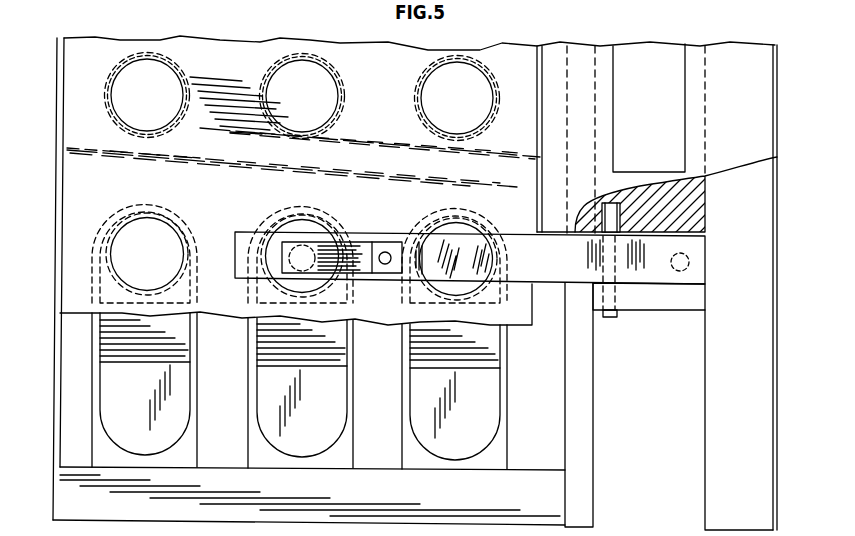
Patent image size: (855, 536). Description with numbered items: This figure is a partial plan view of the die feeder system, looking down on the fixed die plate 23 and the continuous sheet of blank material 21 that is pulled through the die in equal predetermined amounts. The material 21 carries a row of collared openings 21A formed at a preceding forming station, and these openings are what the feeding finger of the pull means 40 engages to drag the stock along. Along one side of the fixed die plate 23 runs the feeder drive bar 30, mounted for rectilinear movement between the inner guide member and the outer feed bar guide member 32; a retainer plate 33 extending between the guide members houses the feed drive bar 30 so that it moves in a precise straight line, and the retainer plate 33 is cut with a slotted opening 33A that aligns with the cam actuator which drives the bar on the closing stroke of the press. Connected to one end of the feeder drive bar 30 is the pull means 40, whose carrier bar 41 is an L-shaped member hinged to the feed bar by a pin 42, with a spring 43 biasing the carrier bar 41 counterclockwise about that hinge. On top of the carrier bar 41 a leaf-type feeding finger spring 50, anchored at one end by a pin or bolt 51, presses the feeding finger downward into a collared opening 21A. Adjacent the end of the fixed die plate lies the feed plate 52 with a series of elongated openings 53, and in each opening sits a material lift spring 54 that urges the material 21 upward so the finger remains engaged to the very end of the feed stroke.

The sheet of blank material 21 is at (197, 58).
The collared opening 21A is at (328, 75).
The fixed die plate 23 is at (55, 73).
The feeder drive bar 30 is at (677, 210).
The outer feed bar guide member 32 is at (578, 400).
The retainer plate 33 is at (748, 133).
The slotted opening 33A is at (683, 83).
The pull means 40 is at (352, 228).
The carrier bar 41 is at (558, 258).
The pin 42 is at (608, 317).
The spring 43 is at (690, 258).
The feeding finger spring 50 is at (330, 246).
The pin or bolt 51 is at (385, 252).
The feed plate 52 is at (225, 443).
The elongated openings 53 is at (337, 462).
The material lift spring 54 is at (133, 400).